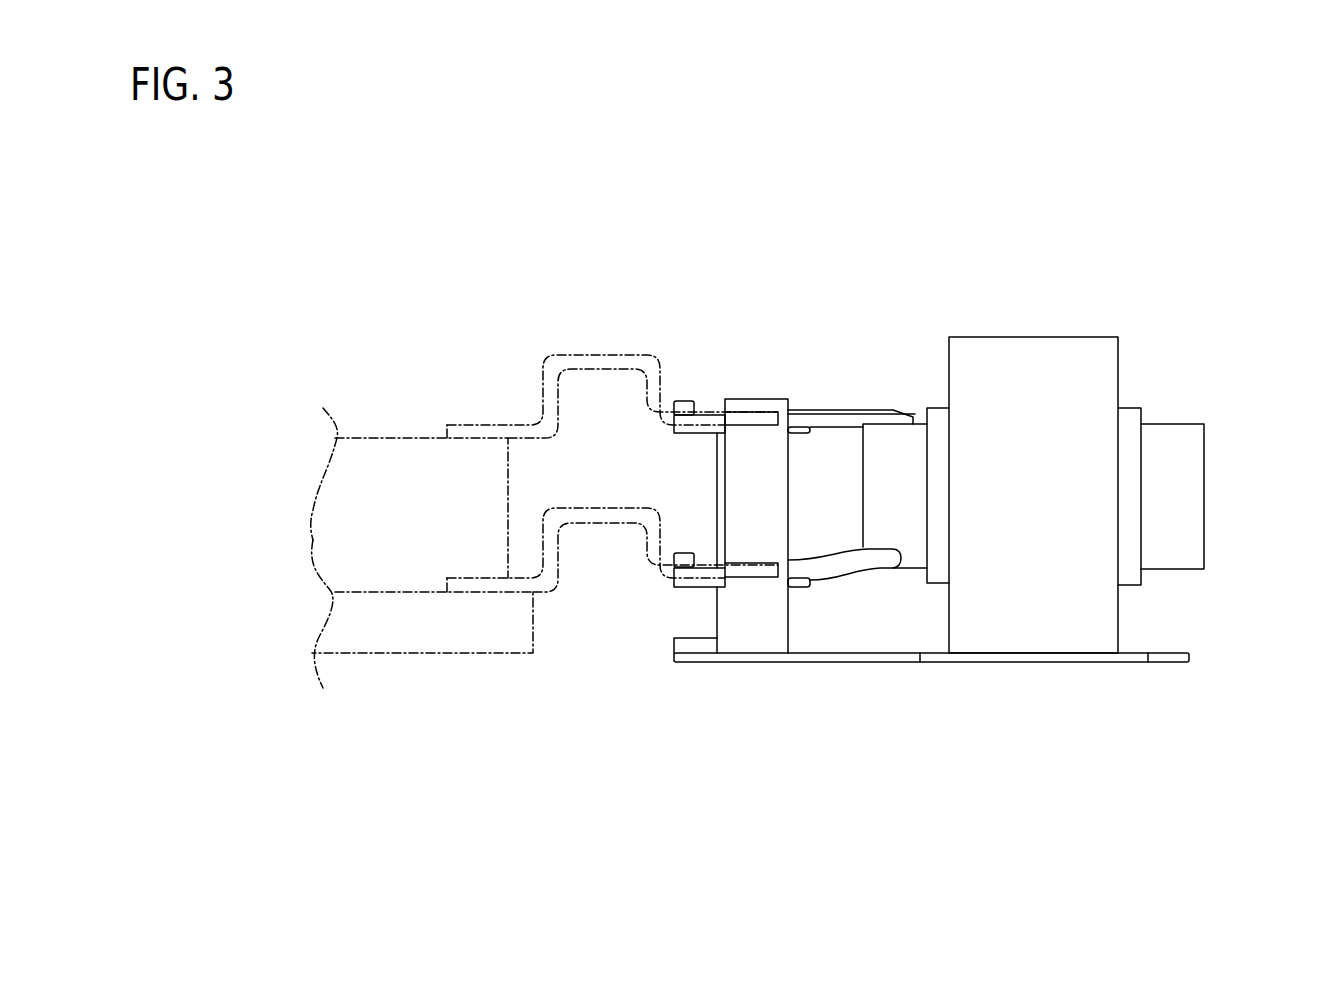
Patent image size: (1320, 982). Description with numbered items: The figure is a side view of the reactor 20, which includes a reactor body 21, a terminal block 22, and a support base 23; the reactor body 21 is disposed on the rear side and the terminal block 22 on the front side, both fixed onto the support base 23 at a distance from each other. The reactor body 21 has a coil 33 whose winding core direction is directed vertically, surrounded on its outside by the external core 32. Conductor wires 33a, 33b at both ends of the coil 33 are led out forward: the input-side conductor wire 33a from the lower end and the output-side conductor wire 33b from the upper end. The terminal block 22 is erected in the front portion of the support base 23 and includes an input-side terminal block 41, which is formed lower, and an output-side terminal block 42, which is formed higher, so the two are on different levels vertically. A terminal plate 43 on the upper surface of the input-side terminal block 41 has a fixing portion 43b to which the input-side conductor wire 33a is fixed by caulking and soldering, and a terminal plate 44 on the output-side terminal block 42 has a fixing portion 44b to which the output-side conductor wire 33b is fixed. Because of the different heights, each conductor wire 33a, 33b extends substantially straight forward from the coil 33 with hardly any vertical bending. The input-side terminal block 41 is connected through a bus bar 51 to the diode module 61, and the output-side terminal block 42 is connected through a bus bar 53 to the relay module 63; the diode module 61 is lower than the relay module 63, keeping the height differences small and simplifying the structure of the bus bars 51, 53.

The reactor 20 is at (1145, 295).
The reactor body 21 is at (1048, 330).
The terminal block 22 is at (757, 392).
The support base 23 is at (845, 664).
The external core 32 is at (1057, 637).
The coil 33 is at (1195, 460).
The input-side conductor wire 33a is at (838, 566).
The output-side conductor wire 33b is at (843, 410).
The input-side terminal block 41 is at (753, 642).
The output-side terminal block 42 is at (775, 484).
The terminal plate 43 is at (688, 588).
The fixing portion 43b is at (683, 553).
The terminal plate 44 is at (685, 433).
The fixing portion 44b is at (683, 400).
The bus bar 51 is at (543, 578).
The bus bar 53 is at (543, 425).
The diode module 61 is at (384, 593).
The relay module 63 is at (384, 440).